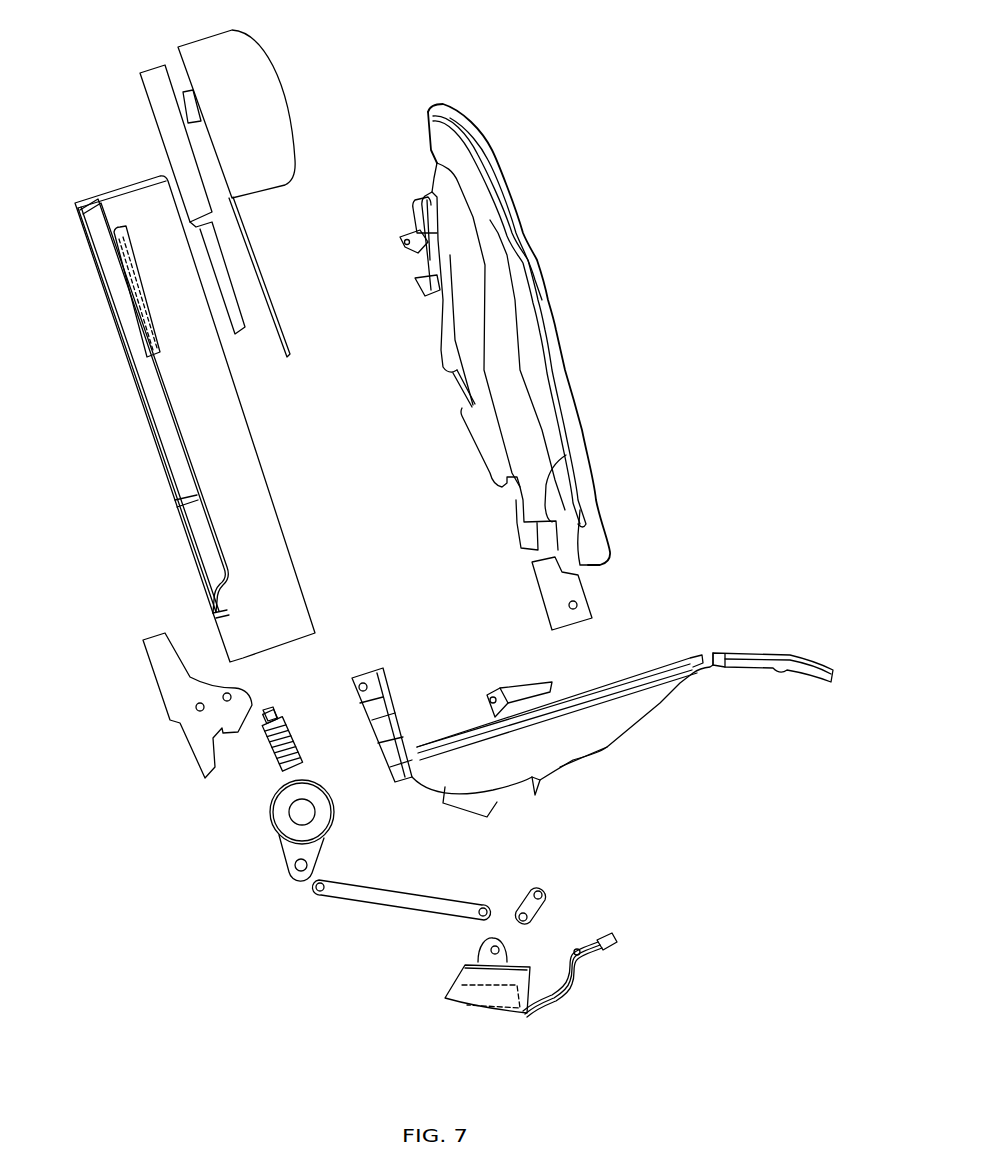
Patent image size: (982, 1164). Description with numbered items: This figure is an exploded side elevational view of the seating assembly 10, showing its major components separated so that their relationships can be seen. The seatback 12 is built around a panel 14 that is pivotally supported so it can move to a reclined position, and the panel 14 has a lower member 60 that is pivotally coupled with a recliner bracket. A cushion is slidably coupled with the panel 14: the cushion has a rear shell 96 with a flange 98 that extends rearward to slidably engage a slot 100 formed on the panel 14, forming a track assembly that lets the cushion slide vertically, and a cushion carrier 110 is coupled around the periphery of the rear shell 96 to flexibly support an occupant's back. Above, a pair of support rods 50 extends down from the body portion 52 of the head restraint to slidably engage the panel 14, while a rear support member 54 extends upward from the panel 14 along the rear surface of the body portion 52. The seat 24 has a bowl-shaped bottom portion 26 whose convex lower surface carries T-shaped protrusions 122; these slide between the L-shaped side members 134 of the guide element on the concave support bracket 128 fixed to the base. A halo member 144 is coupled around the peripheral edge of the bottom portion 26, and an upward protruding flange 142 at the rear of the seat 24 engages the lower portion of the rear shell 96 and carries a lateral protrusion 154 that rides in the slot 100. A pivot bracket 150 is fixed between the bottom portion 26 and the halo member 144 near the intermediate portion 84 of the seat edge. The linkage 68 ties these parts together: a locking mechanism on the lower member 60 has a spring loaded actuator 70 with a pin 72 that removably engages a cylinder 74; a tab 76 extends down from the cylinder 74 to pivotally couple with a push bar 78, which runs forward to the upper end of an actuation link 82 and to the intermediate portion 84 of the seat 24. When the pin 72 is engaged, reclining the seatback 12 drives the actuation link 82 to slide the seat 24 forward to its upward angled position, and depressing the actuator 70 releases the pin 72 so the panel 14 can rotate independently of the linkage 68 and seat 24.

The seating assembly 10 is at (594, 131).
The seatback 12 is at (538, 203).
The panel 14 is at (100, 243).
The seat 24 is at (717, 623).
The bottom portion 26 is at (612, 722).
The support rods 50 is at (254, 239).
The body portion 52 is at (262, 106).
The rear support member 54 is at (168, 130).
The lower member 60 is at (175, 690).
The linkage 68 is at (342, 997).
The spring loaded actuator 70 is at (264, 740).
The pin 72 is at (295, 768).
The cylinder 74 is at (275, 800).
The tab 76 is at (290, 852).
The push bar 78 is at (396, 900).
The actuation link 82 is at (545, 910).
The intermediate portion 84 is at (563, 697).
The rear shell 96 is at (473, 280).
The flange 98 is at (418, 250).
The slot 100 is at (128, 312).
The cushion carrier 110 is at (544, 316).
The T-shaped protrusions 122 is at (462, 803).
The support bracket 128 is at (584, 955).
The L-shaped side members 134 is at (475, 995).
The flange 142 is at (400, 705).
The halo member 144 is at (630, 690).
The pivot bracket 150 is at (513, 690).
The lateral protrusion 154 is at (404, 239).